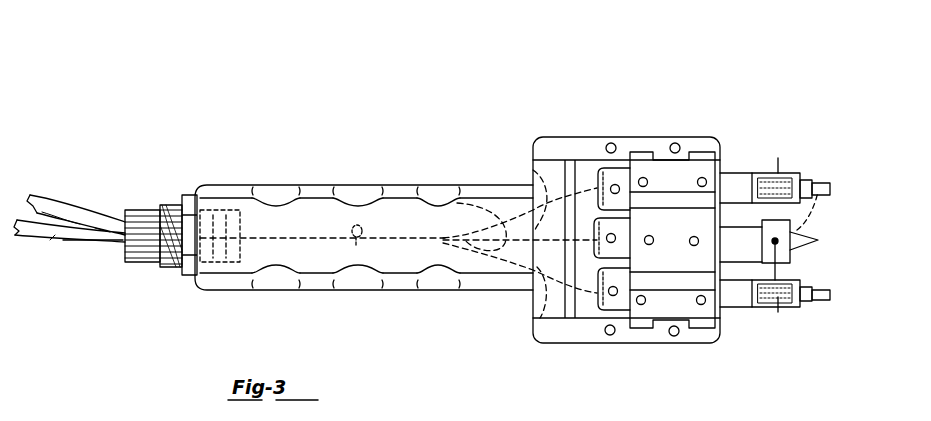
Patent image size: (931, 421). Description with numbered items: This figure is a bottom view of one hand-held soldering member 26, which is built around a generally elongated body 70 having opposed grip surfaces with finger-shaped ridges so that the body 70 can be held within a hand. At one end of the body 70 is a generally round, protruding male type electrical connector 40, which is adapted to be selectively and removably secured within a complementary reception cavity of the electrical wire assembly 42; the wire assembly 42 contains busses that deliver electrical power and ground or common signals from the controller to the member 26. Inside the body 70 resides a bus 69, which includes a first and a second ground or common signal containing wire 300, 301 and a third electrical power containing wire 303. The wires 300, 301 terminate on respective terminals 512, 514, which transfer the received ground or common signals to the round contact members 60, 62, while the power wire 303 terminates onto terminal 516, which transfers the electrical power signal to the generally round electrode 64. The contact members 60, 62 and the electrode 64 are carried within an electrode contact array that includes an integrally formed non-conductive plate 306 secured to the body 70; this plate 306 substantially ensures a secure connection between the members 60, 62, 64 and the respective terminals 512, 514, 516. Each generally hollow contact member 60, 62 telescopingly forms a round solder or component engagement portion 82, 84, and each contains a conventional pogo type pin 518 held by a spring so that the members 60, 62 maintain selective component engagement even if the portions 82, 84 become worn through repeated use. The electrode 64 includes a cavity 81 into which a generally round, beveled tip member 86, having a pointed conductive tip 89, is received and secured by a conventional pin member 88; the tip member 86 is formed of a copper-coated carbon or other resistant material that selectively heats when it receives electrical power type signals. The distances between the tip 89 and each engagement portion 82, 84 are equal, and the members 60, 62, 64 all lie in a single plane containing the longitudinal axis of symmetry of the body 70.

The member 26 is at (595, 86).
The male type electrical connector 40 is at (213, 210).
The electrical wire assembly 42 is at (80, 230).
The contact member 60 is at (770, 290).
The contact member 62 is at (752, 175).
The electrode 64 is at (797, 232).
The bus 69 is at (364, 234).
The body 70 is at (428, 292).
The cavity 81 is at (826, 185).
The solder/component engagement portion 82 is at (817, 180).
The solder/component engagement portion 84 is at (820, 300).
The tip member 86 is at (810, 247).
The pin member 88 is at (753, 285).
The pointed conductive tip 89 is at (818, 240).
The ground and/or common signal containing wire 300 is at (537, 173).
The ground and/or common signal containing wire 301 is at (540, 320).
The electrical power containing wire 303 is at (444, 200).
The non-conductive plate 306 is at (680, 200).
The terminal 512 is at (620, 303).
The terminal 514 is at (608, 173).
The terminal 516 is at (603, 257).
The pogo type pin 518 is at (778, 172).